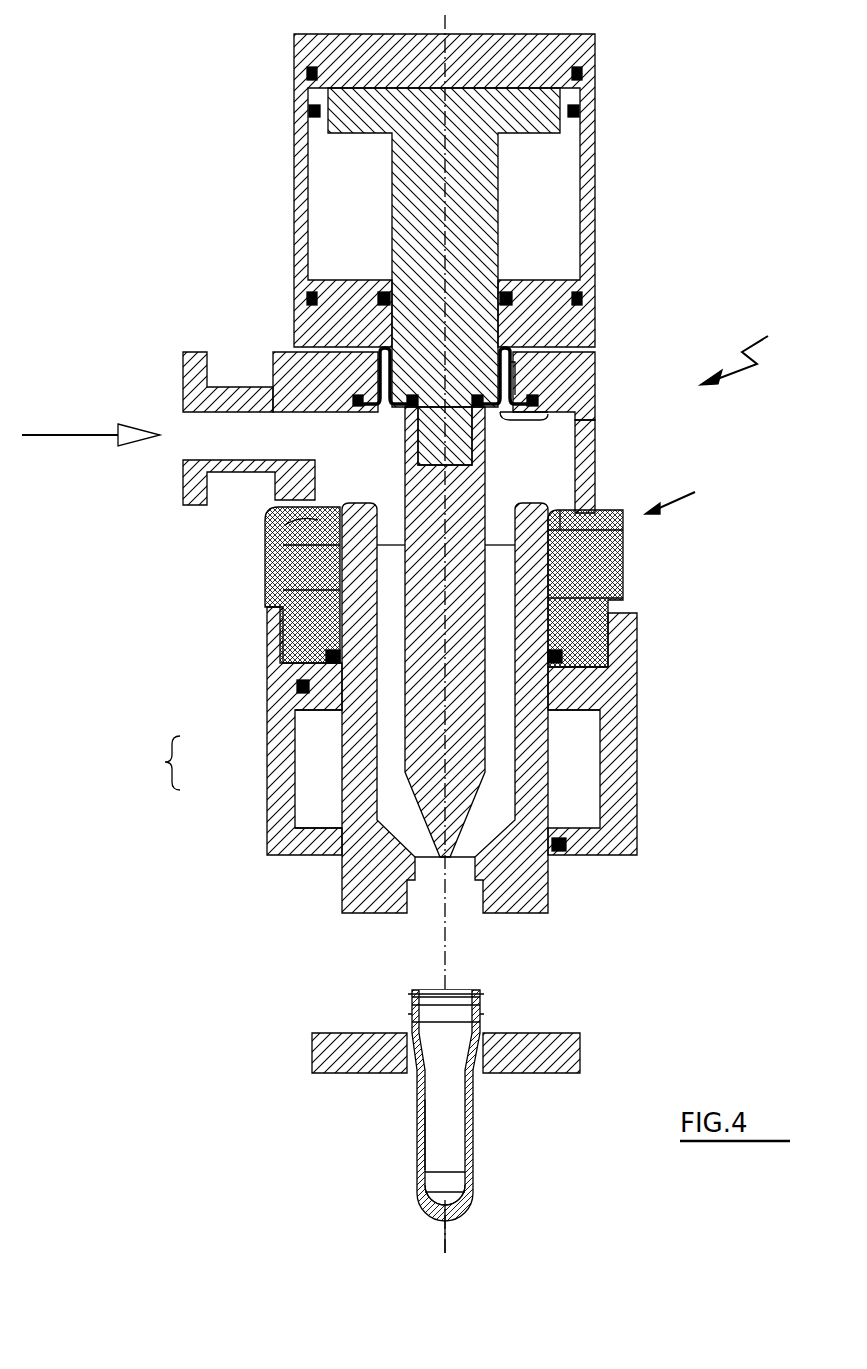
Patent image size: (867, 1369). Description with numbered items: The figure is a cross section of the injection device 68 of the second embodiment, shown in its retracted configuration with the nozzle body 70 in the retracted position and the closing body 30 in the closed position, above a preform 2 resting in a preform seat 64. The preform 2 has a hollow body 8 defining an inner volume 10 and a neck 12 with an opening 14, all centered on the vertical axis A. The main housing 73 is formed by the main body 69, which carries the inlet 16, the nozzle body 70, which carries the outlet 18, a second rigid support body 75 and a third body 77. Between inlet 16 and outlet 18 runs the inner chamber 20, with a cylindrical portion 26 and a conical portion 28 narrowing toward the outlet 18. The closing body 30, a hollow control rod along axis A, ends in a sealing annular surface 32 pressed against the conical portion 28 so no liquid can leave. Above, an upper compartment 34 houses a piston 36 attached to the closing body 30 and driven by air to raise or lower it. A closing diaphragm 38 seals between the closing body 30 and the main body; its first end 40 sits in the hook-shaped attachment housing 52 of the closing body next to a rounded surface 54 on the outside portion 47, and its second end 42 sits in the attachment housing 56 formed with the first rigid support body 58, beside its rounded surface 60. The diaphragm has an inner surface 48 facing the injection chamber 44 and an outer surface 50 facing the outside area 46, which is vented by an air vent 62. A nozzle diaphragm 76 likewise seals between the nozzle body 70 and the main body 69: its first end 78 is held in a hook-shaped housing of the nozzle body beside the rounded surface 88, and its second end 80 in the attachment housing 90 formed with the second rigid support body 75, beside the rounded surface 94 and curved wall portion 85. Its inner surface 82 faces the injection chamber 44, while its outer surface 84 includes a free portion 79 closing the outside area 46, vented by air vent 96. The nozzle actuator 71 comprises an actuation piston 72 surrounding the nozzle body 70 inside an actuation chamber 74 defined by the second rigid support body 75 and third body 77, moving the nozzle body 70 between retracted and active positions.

The preform 2 is at (466, 1160).
The hollow body 8 is at (414, 1125).
The inner volume 10 is at (453, 1128).
The neck 12 is at (484, 1024).
The opening 14 is at (465, 992).
The inlet 16 is at (208, 445).
The outlet 18 is at (430, 903).
The inner chamber 20 is at (560, 740).
The cylindrical portion 26 is at (585, 775).
The conical portion 28 is at (512, 795).
The closing body 30 is at (470, 580).
The sealing annular surface 32 is at (388, 878).
The upper compartment 34 is at (583, 190).
The piston 36 is at (552, 140).
The closing diaphragm 38 is at (570, 386).
The first end of the closing diaphragm 40 is at (518, 348).
The second end of the closing diaphragm 42 is at (345, 408).
The injection chamber 44 is at (340, 480).
The outside area 46 is at (320, 600).
The outside portion of the closing body 47 is at (490, 352).
The inner surface of the closing diaphragm 48 is at (356, 397).
The outer surface of the closing diaphragm 50 is at (412, 350).
The attachment housing of the closing body 52 is at (414, 395).
The rounded surface of the closing body 54 is at (384, 372).
The attachment housing in the chamber wall 56 is at (538, 410).
The first rigid support body 58 is at (532, 395).
The rounded surface of the first rigid support body 60 is at (512, 416).
The air vent 62 is at (345, 355).
The preform seat 64 is at (330, 1073).
The injection device 68 is at (752, 347).
The main body 69 is at (565, 395).
The nozzle body 70 is at (320, 785).
The nozzle actuator 71 is at (156, 763).
The actuation piston 72 is at (300, 728).
The main housing 73 is at (636, 569).
The actuation chamber 74 is at (305, 755).
The second rigid support body 75 is at (565, 597).
The nozzle diaphragm 76 is at (586, 478).
The third body 77 is at (282, 698).
The first end of the nozzle diaphragm 78 is at (368, 503).
The free portion 79 is at (352, 565).
The second end of the nozzle diaphragm 80 is at (320, 525).
The inner surface of the nozzle diaphragm 82 is at (570, 510).
The outer surface of the nozzle diaphragm 84 is at (560, 530).
The curved wall portion 85 is at (320, 570).
The rounded surface of the nozzle body 88 is at (508, 540).
The attachment housing in the chamber wall 90 is at (285, 527).
The rounded surface of the second rigid support body 94 is at (330, 590).
The air vent 96 is at (575, 615).
The axis A is at (446, 1241).